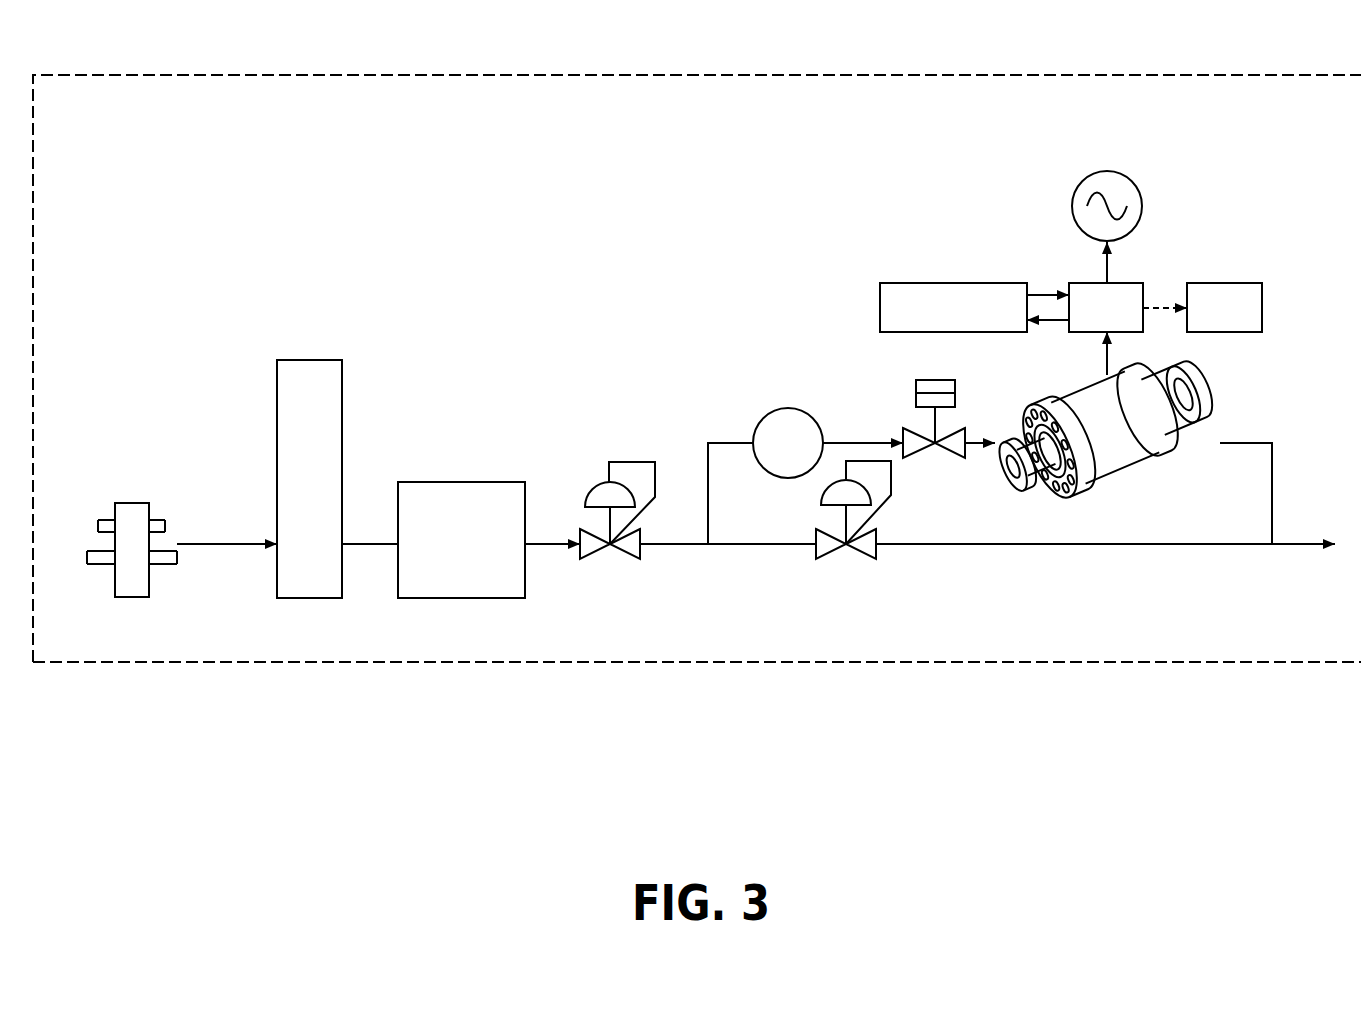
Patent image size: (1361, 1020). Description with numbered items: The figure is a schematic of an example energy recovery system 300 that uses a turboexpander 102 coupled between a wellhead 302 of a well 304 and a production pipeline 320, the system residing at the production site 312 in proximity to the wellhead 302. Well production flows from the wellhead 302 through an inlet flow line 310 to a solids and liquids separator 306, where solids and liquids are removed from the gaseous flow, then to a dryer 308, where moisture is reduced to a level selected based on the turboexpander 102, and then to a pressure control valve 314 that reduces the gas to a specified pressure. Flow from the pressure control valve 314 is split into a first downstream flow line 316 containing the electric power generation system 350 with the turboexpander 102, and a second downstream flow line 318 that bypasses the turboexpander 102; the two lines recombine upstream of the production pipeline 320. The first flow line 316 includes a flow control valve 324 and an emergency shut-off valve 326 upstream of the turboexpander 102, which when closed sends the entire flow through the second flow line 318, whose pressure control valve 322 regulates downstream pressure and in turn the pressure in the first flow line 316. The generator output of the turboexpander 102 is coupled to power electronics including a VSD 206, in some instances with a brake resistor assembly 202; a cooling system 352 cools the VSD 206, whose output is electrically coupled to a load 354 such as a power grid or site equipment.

The turboexpander 102 is at (1210, 400).
The brake resistor assembly 202 is at (1232, 283).
The VSD 206 is at (1133, 283).
The energy recovery system 300 is at (485, 230).
The wellhead 302 is at (131, 503).
The well 304 is at (163, 607).
The solids and liquids separator 306 is at (322, 360).
The dryer 308 is at (497, 482).
The inlet flow line 310 is at (217, 544).
The production site 312 is at (1196, 75).
The pressure control valve 314 is at (638, 560).
The first downstream flow line 316 is at (723, 443).
The second downstream flow line 318 is at (720, 548).
The production pipeline 320 is at (1298, 543).
The pressure control valve 322 is at (876, 562).
The flow control valve 324 is at (787, 408).
The emergency shut-off valve 326 is at (905, 428).
The electric power generation system 350 is at (1077, 242).
The cooling system 352 is at (955, 283).
The load 354 is at (1105, 172).